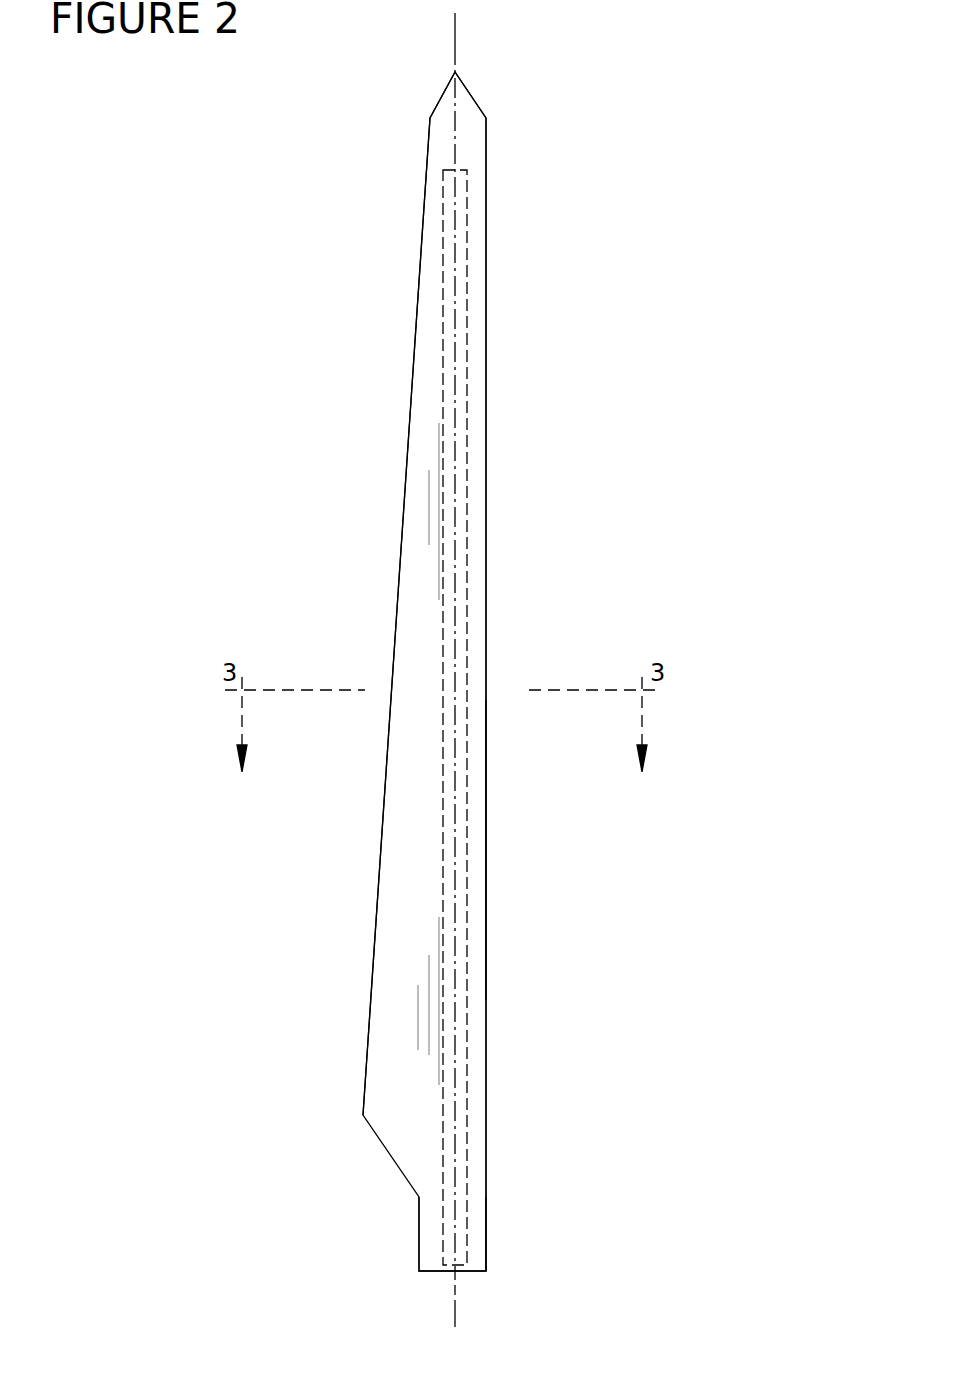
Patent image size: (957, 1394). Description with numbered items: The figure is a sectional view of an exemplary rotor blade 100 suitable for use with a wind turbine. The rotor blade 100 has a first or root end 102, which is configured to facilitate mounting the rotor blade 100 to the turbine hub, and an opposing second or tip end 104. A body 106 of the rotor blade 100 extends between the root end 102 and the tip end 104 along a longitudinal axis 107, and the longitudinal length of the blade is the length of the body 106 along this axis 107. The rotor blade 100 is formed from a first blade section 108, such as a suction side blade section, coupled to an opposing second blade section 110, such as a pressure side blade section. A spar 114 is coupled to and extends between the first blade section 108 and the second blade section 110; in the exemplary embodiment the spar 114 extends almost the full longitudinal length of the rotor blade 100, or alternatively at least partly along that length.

The rotor blade 100 is at (637, 153).
The root end 102 is at (475, 1248).
The tip end 104 is at (455, 72).
The body 106 is at (498, 921).
The longitudinal axis 107 is at (455, 1300).
The first blade section 108 is at (485, 388).
The second blade section 110 is at (370, 977).
The spar 114 is at (466, 243).